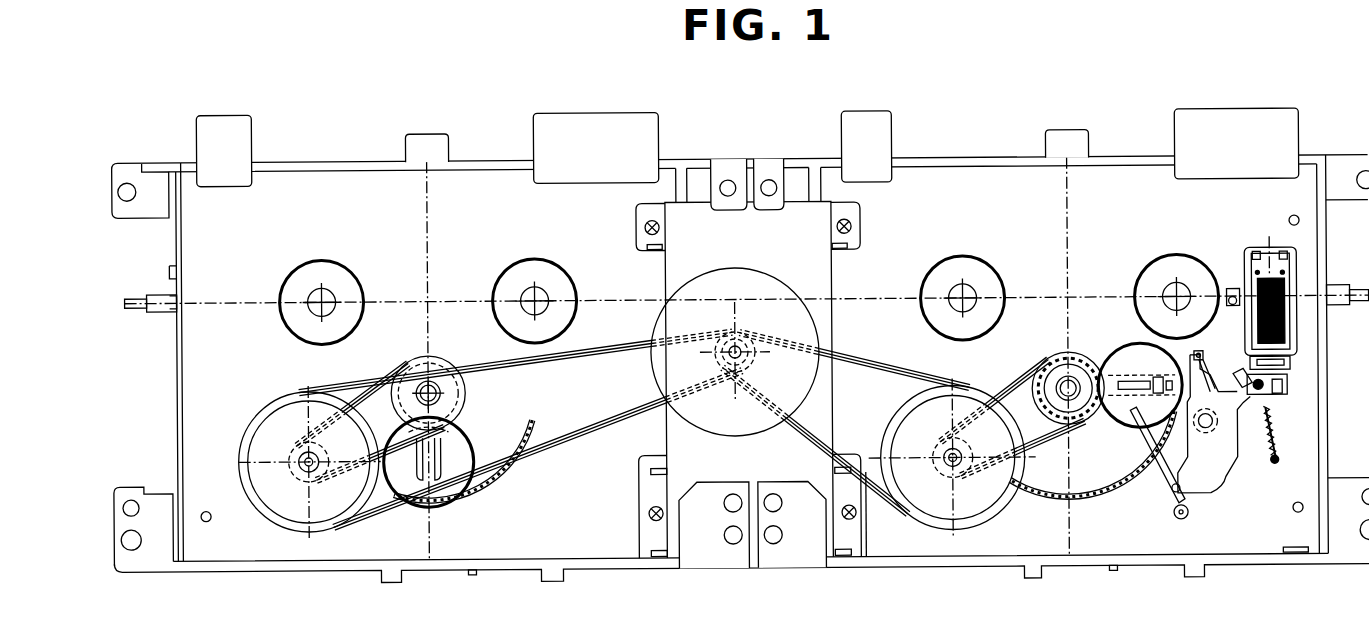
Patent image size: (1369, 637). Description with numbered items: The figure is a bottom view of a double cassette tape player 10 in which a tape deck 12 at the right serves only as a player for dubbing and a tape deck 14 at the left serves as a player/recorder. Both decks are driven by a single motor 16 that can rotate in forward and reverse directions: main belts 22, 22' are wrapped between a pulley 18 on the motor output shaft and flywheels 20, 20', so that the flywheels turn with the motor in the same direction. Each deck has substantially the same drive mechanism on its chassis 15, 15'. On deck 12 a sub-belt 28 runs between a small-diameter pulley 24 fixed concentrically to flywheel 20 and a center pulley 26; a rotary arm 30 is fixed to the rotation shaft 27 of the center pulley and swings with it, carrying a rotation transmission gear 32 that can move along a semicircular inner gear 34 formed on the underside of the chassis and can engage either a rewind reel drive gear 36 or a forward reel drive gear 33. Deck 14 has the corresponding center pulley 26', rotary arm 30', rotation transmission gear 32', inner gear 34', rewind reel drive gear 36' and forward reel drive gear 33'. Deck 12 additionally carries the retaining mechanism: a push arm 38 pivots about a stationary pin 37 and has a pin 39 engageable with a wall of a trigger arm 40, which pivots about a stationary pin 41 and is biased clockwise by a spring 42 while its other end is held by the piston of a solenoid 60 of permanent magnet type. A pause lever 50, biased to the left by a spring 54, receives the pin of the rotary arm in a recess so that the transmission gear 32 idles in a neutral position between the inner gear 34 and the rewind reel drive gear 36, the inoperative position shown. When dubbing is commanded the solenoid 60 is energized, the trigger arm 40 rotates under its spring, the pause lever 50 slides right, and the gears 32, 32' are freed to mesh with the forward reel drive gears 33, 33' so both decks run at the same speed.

The double cassette tape player 10 is at (750, 157).
The tape deck 12 is at (1067, 128).
The tape deck 14 is at (407, 129).
The chassis 15 is at (1069, 144).
The chassis 15' is at (427, 153).
The motor 16 is at (733, 290).
The pulley 18 is at (776, 342).
The flywheel 20 is at (952, 468).
The flywheel 20' is at (290, 450).
The main belt 22 is at (845, 417).
The main belt 22' is at (519, 429).
The small-diameter pulley 24 is at (940, 446).
The center pulley 26 is at (1070, 362).
The center pulley 26' is at (445, 375).
The rotation shaft 27 is at (1060, 372).
The sub-belt 28 is at (1012, 383).
The rotary arm 30 is at (1126, 419).
The rotary arm 30' is at (455, 438).
The rotation transmission gear 32 is at (1140, 363).
The rotation transmission gear 32' is at (449, 462).
The forward reel drive gear 33 is at (948, 287).
The forward reel drive gear 33' is at (302, 291).
The inner gear 34 is at (1092, 454).
The inner gear 34' is at (469, 442).
The rewind reel drive gear 36 is at (1156, 285).
The rewind reel drive gear 36' is at (517, 286).
The stationary pin 37 is at (1180, 526).
The push arm 38 is at (1150, 448).
The pin 39 is at (1172, 503).
The trigger arm 40 is at (1215, 478).
The stationary pin 41 is at (1200, 433).
The spring 42 is at (1292, 442).
The pause lever 50 is at (1268, 440).
The spring 54 is at (1206, 377).
The solenoid 60 is at (1250, 272).